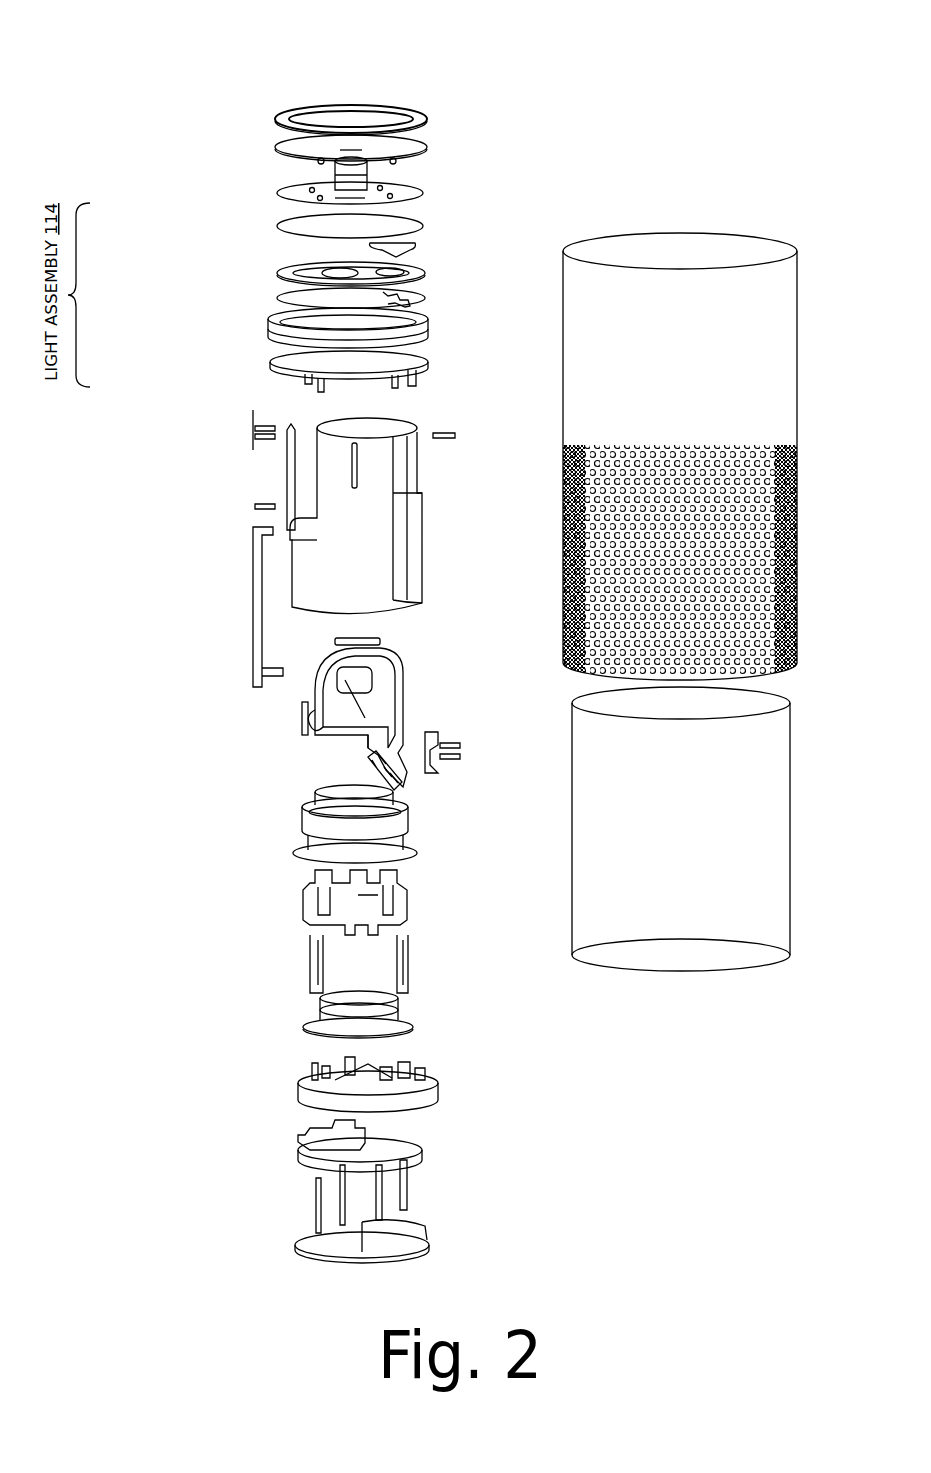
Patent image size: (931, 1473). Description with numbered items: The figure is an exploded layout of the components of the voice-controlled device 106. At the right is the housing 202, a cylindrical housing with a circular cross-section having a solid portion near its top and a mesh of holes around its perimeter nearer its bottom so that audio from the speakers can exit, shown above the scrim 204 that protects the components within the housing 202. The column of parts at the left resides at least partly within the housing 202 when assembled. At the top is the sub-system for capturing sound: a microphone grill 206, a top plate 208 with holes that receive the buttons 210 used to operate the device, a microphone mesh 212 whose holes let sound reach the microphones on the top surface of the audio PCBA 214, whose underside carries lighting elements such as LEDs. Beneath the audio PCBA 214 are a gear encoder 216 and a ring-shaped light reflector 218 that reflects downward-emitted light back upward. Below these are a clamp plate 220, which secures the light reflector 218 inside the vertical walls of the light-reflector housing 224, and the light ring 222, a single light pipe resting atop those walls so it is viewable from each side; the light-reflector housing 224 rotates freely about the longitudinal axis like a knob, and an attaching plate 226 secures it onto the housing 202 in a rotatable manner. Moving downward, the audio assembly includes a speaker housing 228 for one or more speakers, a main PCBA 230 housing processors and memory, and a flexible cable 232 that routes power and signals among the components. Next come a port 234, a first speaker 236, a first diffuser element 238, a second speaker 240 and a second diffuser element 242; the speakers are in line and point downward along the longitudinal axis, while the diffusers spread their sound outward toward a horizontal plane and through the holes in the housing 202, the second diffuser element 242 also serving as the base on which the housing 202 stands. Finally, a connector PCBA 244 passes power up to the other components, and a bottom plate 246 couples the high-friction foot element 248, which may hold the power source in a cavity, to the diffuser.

The voice-controlled device 106 is at (735, 70).
The housing 202 is at (780, 228).
The scrim 204 is at (797, 692).
The microphone grill 206 is at (287, 103).
The top plate 208 is at (262, 145).
The buttons 210 is at (318, 178).
The microphone mesh 212 is at (262, 188).
The audio PCBA 214 is at (420, 215).
The gear encoder 216 is at (424, 250).
The light reflector 218 is at (285, 255).
The clamp plate 220 is at (270, 292).
The light ring 222 is at (265, 313).
The light-reflector housing 224 is at (265, 342).
The attaching plate 226 is at (265, 373).
The speaker housing 228 is at (417, 413).
The main PCBA 230 is at (282, 473).
The flexible cable 232 is at (244, 567).
The port 234 is at (410, 665).
The first speaker 236 is at (288, 790).
The first diffuser element 238 is at (280, 882).
The second speaker 240 is at (295, 1002).
The second diffuser element 242 is at (288, 1075).
The connector PCBA 244 is at (290, 1115).
The bottom plate 246 is at (298, 1157).
The foot element 248 is at (288, 1230).